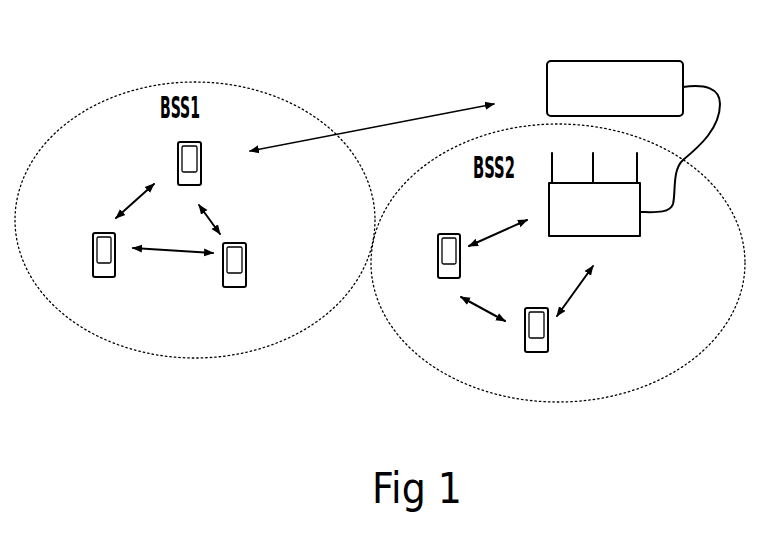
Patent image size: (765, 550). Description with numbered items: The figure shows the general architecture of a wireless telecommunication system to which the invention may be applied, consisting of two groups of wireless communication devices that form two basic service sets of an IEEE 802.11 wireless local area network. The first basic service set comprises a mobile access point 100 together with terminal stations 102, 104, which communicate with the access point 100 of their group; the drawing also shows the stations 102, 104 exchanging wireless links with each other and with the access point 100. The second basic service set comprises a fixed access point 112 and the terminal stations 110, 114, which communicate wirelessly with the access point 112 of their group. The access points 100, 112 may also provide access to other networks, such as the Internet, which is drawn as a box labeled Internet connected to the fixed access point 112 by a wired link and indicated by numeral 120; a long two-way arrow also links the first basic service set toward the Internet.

The access point 100 is at (201, 170).
The terminal station 102 is at (115, 262).
The terminal station 104 is at (246, 272).
The terminal station 110 is at (460, 263).
The access point 112 is at (640, 222).
The terminal station 114 is at (548, 337).
The Internet 120 is at (619, 61).